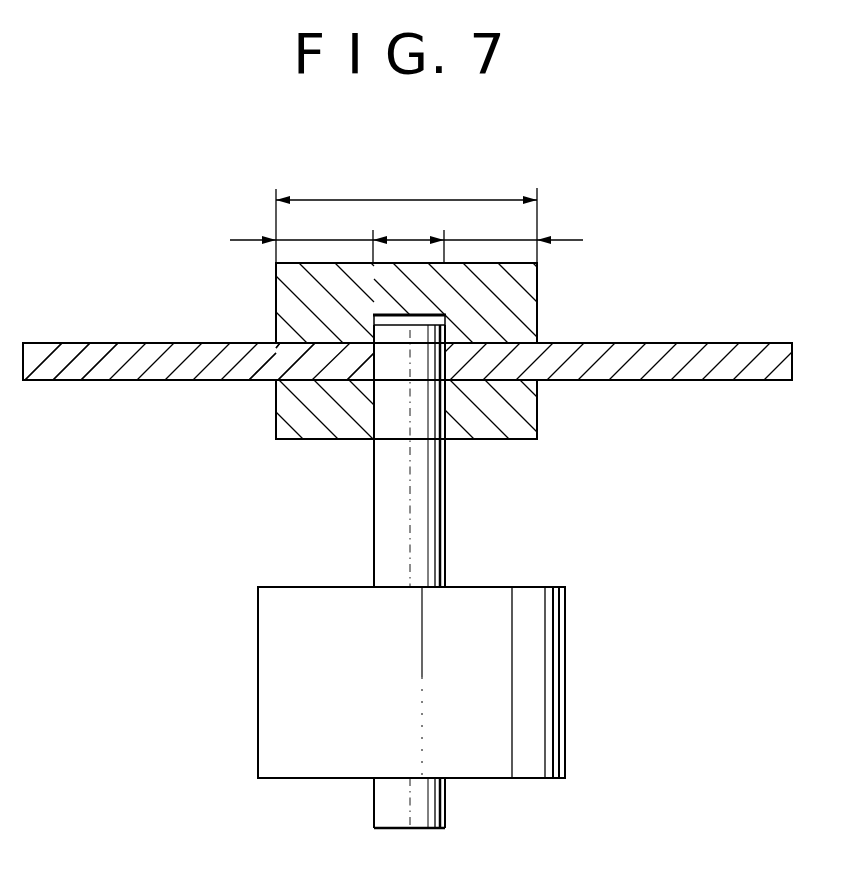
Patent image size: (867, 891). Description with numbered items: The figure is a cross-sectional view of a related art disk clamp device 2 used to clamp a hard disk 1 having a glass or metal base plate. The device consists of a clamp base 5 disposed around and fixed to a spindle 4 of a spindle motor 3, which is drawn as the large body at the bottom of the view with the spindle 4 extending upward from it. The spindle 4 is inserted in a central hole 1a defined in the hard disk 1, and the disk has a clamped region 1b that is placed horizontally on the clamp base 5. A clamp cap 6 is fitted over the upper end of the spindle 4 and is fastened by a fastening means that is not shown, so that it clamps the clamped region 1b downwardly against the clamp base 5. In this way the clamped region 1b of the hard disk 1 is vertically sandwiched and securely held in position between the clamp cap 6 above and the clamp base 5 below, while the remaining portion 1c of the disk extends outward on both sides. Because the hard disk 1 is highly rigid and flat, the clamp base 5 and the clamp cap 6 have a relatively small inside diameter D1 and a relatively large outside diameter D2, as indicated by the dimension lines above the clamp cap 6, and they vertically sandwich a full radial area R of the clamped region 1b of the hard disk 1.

The hard disk 1 is at (738, 352).
The central hole 1a is at (375, 357).
The clamped region 1b is at (317, 358).
The recording surface of disc 1c is at (77, 368).
The disk clamp device 2 is at (577, 227).
The spindle motor 3 is at (545, 680).
The spindle 4 is at (433, 518).
The clamp base 5 is at (522, 417).
The clamp cap 6 is at (522, 313).
The inside diameter D1 is at (417, 238).
The outside diameter D2 is at (392, 198).
The radial area R is at (323, 238).